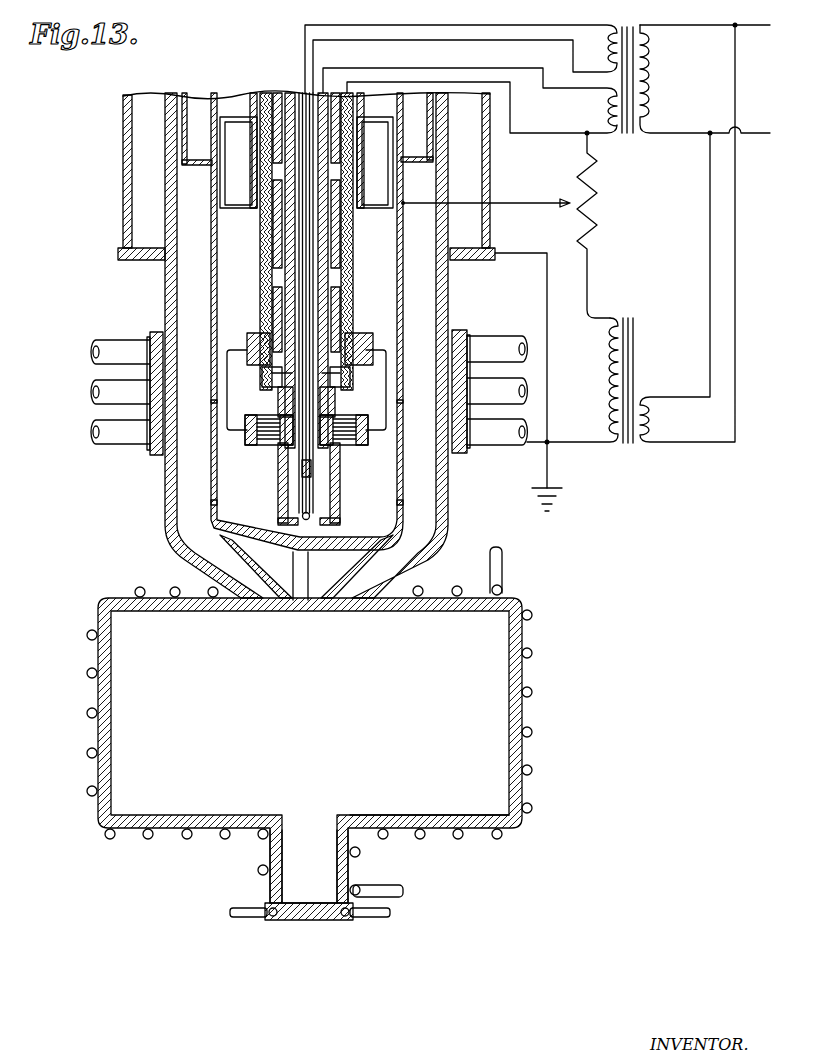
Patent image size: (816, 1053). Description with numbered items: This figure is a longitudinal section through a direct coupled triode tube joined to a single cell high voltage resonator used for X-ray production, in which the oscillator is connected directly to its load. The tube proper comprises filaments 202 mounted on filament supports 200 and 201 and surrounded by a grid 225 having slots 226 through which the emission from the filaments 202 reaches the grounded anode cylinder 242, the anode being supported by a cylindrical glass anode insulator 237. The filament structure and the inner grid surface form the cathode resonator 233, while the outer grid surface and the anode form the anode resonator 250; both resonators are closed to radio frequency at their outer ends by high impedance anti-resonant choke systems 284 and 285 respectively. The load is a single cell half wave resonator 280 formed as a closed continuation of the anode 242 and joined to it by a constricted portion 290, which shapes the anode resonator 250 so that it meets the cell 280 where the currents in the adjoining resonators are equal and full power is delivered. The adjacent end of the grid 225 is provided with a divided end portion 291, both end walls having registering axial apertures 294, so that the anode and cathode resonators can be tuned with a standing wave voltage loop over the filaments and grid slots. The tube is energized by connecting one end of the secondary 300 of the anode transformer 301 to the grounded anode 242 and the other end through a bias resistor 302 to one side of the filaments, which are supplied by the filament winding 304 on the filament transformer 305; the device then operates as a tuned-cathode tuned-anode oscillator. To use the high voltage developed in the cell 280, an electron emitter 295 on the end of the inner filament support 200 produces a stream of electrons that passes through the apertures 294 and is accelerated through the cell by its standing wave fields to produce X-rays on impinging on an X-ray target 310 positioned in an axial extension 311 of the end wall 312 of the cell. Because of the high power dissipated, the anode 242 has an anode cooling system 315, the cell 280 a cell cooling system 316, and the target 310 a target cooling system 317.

The inner filament support 200 is at (285, 255).
The filament support 201 is at (260, 297).
The filaments 202 is at (227, 425).
The grid 225 is at (211, 299).
The grid slots 226 is at (210, 430).
The cathode resonator 233 is at (383, 484).
The cylindrical glass anode insulator 237 is at (123, 167).
The anode cylinder 242 is at (165, 266).
The anode resonator 250 is at (192, 512).
The single cell half wave resonator 280 is at (330, 734).
The anti-resonant choke system 284 is at (238, 122).
The anti-resonant choke system 285 is at (190, 110).
The constricted portion 290 is at (450, 534).
The divided end portion 291 is at (283, 585).
The axial apertures 294 is at (312, 598).
The electron emitter 295 is at (309, 520).
The anode transformer secondary 300 is at (556, 382).
The anode transformer 301 is at (632, 326).
The bias resistor 302 is at (592, 207).
The filament winding 304 is at (611, 135).
The filament transformer 305 is at (627, 90).
The X-ray target 310 is at (312, 921).
The axial extension 311 is at (270, 884).
The end wall 312 is at (440, 822).
The anode cooling system 315 is at (90, 395).
The cell cooling system 316 is at (530, 656).
The target cooling system 317 is at (258, 920).